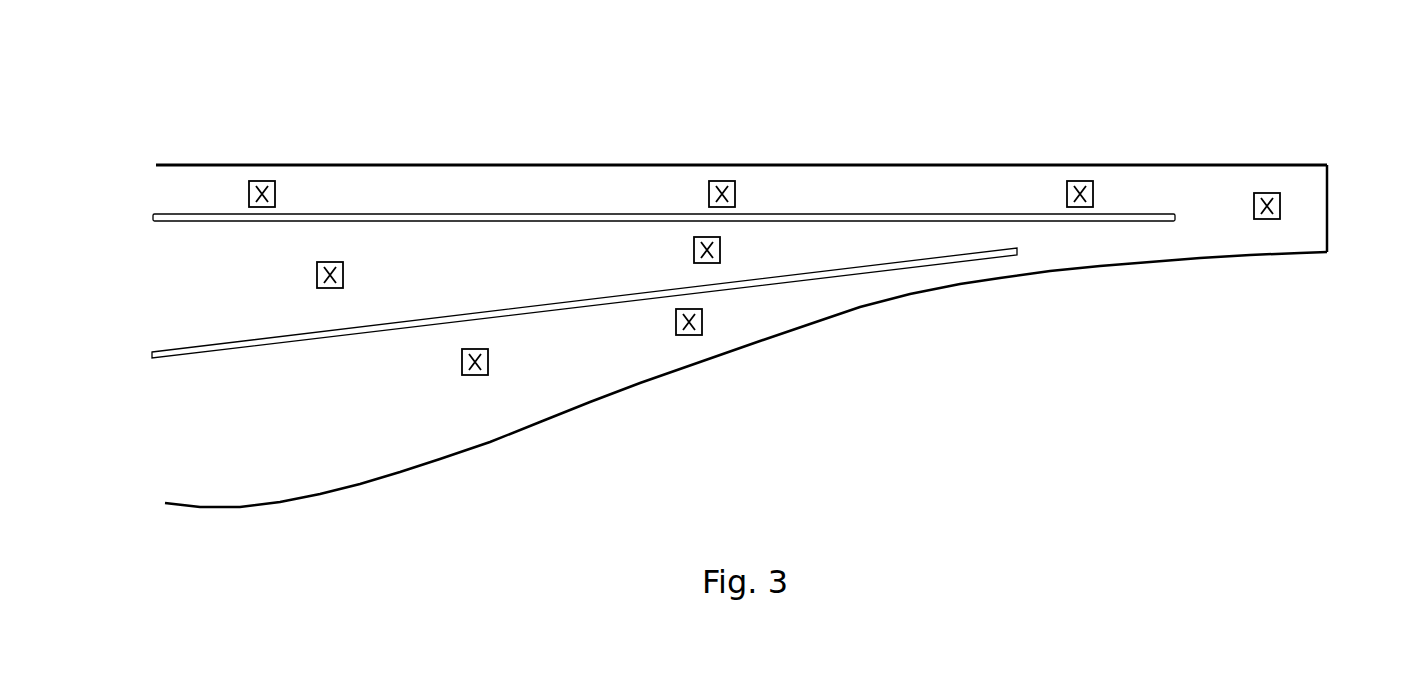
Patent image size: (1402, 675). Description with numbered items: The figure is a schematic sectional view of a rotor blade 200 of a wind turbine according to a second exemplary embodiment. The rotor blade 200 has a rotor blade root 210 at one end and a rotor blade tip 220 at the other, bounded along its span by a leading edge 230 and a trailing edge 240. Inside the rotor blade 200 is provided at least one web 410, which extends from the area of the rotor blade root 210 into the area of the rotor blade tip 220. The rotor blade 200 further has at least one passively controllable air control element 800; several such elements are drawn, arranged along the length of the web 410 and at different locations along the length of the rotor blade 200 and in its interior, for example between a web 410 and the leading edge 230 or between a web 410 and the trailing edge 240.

The rotor blade 200 is at (947, 65).
The rotor blade root 210 is at (205, 470).
The rotor blade tip 220 is at (1388, 233).
The leading edge 230 is at (490, 163).
The trailing edge 240 is at (637, 383).
The web 410 is at (167, 190).
The passively controllable air control element 800 is at (262, 181).